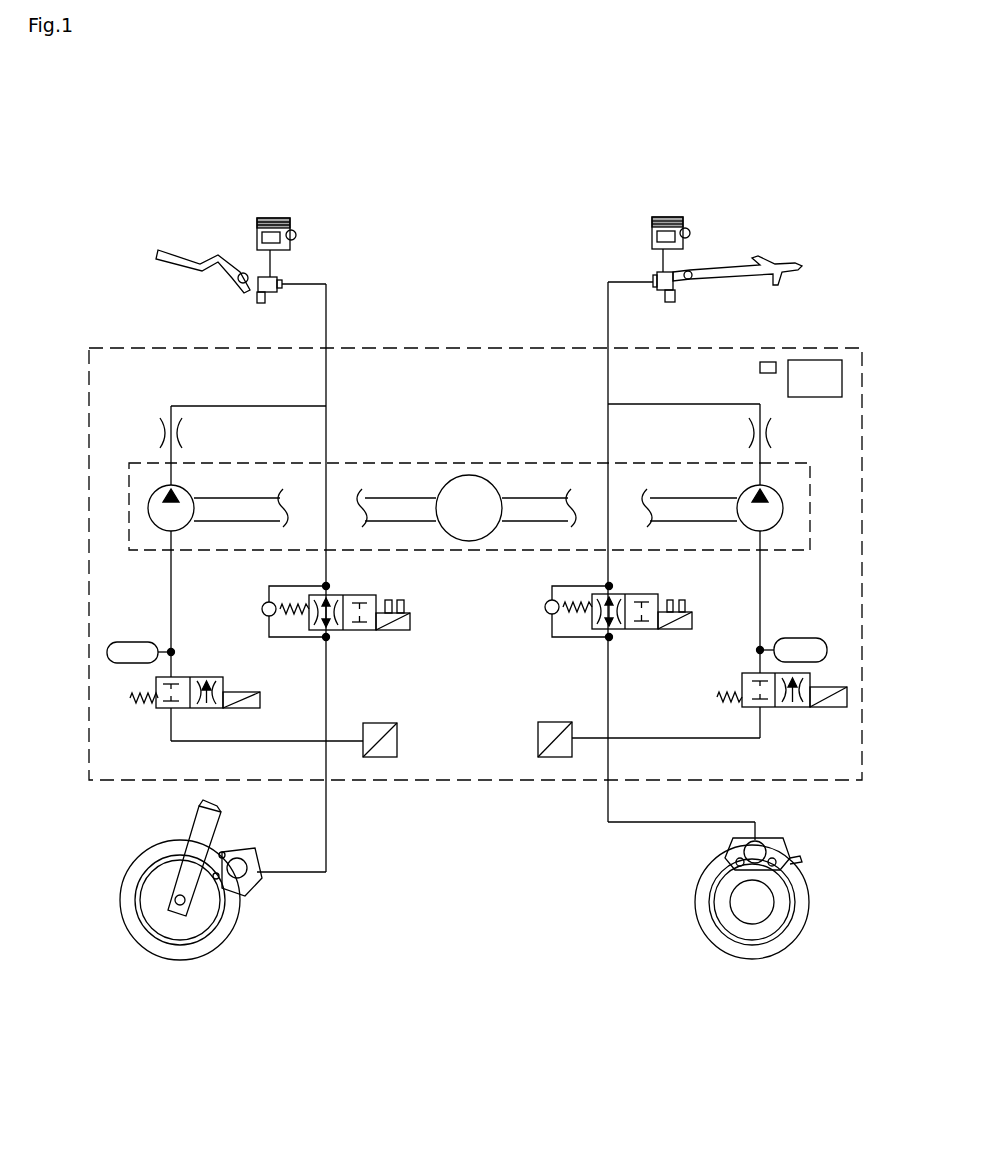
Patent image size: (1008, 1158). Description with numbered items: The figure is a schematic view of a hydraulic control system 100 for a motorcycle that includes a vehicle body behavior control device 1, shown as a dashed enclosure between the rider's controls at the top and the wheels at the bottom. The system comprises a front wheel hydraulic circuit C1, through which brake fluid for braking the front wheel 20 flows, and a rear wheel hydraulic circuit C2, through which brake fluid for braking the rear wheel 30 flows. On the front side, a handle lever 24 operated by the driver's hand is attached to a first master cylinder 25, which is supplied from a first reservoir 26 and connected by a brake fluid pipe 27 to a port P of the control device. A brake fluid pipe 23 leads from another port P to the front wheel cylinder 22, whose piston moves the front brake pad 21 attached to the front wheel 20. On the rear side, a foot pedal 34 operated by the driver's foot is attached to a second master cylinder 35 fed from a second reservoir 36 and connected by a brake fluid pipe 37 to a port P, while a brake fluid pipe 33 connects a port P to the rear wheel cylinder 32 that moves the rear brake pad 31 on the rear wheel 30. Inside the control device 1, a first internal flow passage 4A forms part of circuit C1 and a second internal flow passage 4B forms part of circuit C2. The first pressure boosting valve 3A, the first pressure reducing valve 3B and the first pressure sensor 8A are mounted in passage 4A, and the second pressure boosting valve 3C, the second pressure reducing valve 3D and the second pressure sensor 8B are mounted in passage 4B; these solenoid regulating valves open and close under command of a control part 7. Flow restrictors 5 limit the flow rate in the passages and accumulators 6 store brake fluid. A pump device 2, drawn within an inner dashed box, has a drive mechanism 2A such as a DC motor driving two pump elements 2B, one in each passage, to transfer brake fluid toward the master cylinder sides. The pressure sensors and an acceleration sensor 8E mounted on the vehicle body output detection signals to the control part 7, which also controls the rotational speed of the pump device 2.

The hydraulic control system 100 is at (840, 139).
The vehicle body behavior control device 1 is at (120, 348).
The pump device 2 is at (140, 460).
The drive mechanism 2A is at (446, 486).
The pump element 2B is at (185, 531).
The first pressure boosting valve 3A is at (365, 630).
The first pressure reducing valve 3B is at (210, 677).
The second pressure boosting valve 3C is at (650, 629).
The second pressure reducing valve 3D is at (797, 707).
The first internal flow passage 4A is at (326, 454).
The second internal flow passage 4B is at (608, 454).
The flow restrictor 5 is at (182, 434).
The accumulator 6 is at (129, 643).
The control part 7 is at (816, 398).
The first pressure sensor 8A is at (397, 732).
The second pressure sensor 8B is at (538, 732).
The acceleration sensor 8E is at (768, 374).
The front wheel 20 is at (151, 845).
The front brake pad 21 is at (240, 845).
The front wheel cylinder 22 is at (263, 862).
The brake fluid pipe 23 is at (300, 872).
The handle lever 24 is at (175, 260).
The first master cylinder 25 is at (268, 296).
The first reservoir 26 is at (281, 222).
The brake fluid pipe 27 is at (303, 284).
The rear wheel 30 is at (814, 915).
The rear brake pad 31 is at (700, 870).
The rear wheel cylinder 32 is at (775, 850).
The brake fluid pipe 33 is at (690, 822).
The foot pedal 34 is at (776, 263).
The second master cylinder 35 is at (660, 292).
The second reservoir 36 is at (674, 218).
The brake fluid pipe 37 is at (625, 282).
The port P is at (326, 347).
The front wheel hydraulic circuit C1 is at (338, 407).
The rear wheel hydraulic circuit C2 is at (600, 407).